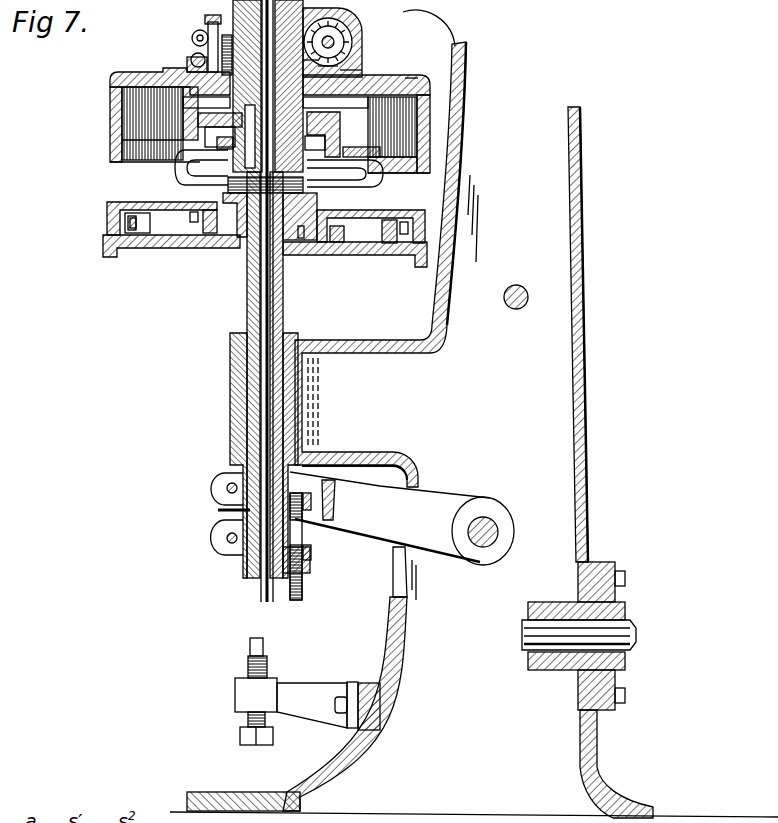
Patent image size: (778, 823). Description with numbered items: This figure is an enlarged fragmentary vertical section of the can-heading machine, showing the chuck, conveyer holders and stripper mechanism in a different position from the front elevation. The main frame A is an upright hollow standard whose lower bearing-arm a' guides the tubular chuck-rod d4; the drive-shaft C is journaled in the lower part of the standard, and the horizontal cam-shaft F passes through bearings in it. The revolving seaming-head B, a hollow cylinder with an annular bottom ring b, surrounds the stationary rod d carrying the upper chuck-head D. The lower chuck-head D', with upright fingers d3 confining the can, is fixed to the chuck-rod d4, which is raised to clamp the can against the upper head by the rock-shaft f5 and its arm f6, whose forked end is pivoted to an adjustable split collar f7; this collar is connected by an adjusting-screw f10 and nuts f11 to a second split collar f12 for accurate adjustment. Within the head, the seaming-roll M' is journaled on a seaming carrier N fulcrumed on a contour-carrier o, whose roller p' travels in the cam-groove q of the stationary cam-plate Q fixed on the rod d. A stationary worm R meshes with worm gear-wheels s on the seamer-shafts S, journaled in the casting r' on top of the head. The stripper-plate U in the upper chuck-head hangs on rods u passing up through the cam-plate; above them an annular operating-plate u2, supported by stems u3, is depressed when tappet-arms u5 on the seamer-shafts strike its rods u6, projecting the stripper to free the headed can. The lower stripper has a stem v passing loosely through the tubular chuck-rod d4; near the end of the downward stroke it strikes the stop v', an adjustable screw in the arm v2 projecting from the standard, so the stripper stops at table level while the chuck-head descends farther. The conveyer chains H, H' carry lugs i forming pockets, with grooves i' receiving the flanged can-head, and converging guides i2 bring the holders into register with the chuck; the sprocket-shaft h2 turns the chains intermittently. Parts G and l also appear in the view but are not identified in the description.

The main frame A is at (575, 462).
The revolving head B is at (115, 116).
The drive-shaft C is at (628, 634).
The upper chuck-head D is at (215, 212).
The lower chuck-head D' is at (313, 214).
The cam-shaft F is at (505, 309).
The contact ring carrier G is at (138, 248).
The conveyer chain H is at (371, 252).
The conveyer chain H' is at (144, 248).
The second seaming-roll M' is at (188, 163).
The seaming carrier N is at (365, 184).
The cam-plate Q is at (188, 43).
The stationary worm R is at (376, 32).
The seamer-shaft S is at (150, 6).
The stripper-plate U is at (247, 194).
The lower bearing-arm a' is at (386, 248).
The annular bottom flange b is at (110, 158).
The stationary vertical rod d is at (355, 56).
The upright fingers d3 is at (193, 217).
The chuck-rod d4 is at (247, 302).
The rock-shaft f5 is at (490, 522).
The rock-arm f6 is at (390, 517).
The adjustable collar f7 is at (222, 482).
The adjusting-screw f10 is at (300, 536).
The nuts f11 is at (308, 578).
The second split collar f12 is at (227, 548).
The sprocket shaft h2 is at (350, 37).
The lugs i is at (259, 225).
The rabbets i' is at (265, 204).
The converging guides i2 is at (220, 213).
The insulating ring l is at (163, 213).
The contour-carrier o is at (330, 150).
The stud or roller p' is at (208, 124).
The cam-groove q is at (343, 140).
The bracket or casting r' is at (182, 55).
The worm gear-wheel s is at (363, 74).
The stripper-rods u is at (305, 107).
The annular operating-plate u2 is at (417, 79).
The rods or stems u3 is at (192, 42).
The tappet-arms u5 is at (193, 32).
The rods u6 is at (198, 56).
The stripper-rod v is at (291, 375).
The stop v' is at (275, 458).
The arm v2 is at (307, 711).